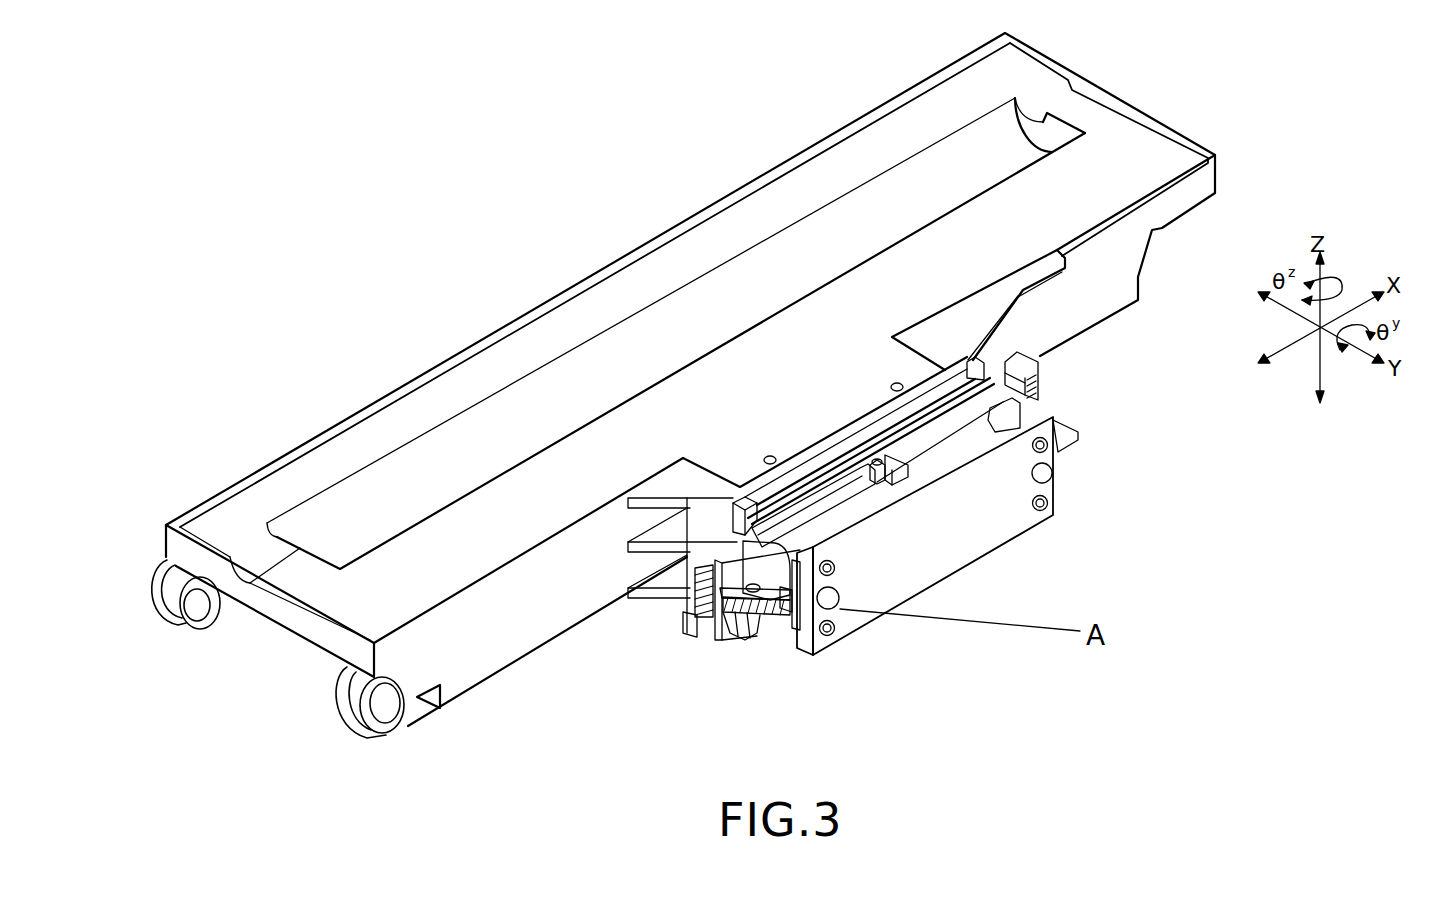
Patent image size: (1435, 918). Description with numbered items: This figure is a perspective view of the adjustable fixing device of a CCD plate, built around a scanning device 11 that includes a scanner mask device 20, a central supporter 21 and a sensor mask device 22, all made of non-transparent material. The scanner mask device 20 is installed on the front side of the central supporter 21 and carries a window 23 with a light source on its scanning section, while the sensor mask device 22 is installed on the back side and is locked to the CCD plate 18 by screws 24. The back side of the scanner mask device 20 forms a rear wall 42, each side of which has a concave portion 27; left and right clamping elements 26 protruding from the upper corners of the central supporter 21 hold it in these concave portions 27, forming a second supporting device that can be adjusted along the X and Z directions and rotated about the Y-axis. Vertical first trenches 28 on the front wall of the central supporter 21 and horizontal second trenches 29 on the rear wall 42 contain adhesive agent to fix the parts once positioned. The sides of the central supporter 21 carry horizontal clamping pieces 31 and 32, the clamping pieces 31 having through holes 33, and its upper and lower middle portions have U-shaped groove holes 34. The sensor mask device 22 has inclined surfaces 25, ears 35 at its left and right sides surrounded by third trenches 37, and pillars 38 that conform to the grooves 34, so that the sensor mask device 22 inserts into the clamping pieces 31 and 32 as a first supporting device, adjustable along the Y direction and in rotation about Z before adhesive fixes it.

The scanning device 11 is at (512, 303).
The CCD plate 18 is at (938, 560).
The scanner mask device 20 is at (1150, 120).
The central supporter 21 is at (683, 635).
The sensor mask device 22 is at (792, 642).
The window 23 is at (652, 333).
The screw 24 is at (835, 605).
The inclined surface 25 is at (1045, 473).
The clamping element 26 is at (1023, 362).
The concave portion 27 is at (685, 562).
The first trench 28 is at (1003, 388).
The second trench 29 is at (683, 597).
The clamping piece 31 is at (770, 590).
The clamping piece 32 is at (782, 630).
The through hole 33 is at (747, 545).
The U shape groove hole 34 is at (877, 458).
The ear 35 is at (747, 630).
The third trench 37 is at (713, 633).
The pillar 38 is at (967, 442).
The rear wall 42 is at (913, 390).